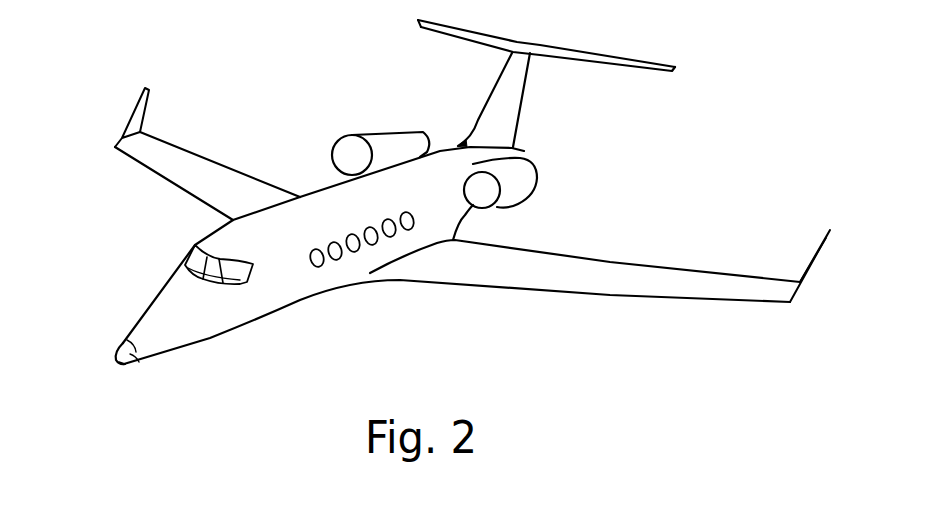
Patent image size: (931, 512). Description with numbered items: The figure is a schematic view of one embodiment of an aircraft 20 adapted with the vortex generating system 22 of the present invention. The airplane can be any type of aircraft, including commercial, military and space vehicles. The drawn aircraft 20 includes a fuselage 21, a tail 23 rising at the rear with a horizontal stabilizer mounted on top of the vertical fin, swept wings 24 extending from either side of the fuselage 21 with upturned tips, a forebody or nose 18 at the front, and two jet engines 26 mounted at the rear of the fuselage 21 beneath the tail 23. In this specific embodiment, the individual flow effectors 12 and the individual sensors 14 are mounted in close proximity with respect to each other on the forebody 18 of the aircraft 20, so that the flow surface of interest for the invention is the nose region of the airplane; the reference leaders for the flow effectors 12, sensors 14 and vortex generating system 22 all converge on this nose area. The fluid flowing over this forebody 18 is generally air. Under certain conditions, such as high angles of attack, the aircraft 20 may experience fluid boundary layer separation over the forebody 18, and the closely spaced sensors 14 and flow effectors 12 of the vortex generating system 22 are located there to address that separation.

The flow effector 12 is at (133, 368).
The sensor 14 is at (126, 343).
The forebody (nose) 18 is at (129, 343).
The aircraft 20 is at (168, 342).
The fuselage 21 is at (250, 323).
The vortex generating system 22 is at (125, 366).
The tail 23 is at (521, 107).
The wing 24 is at (188, 153).
The jet engine 26 is at (388, 130).